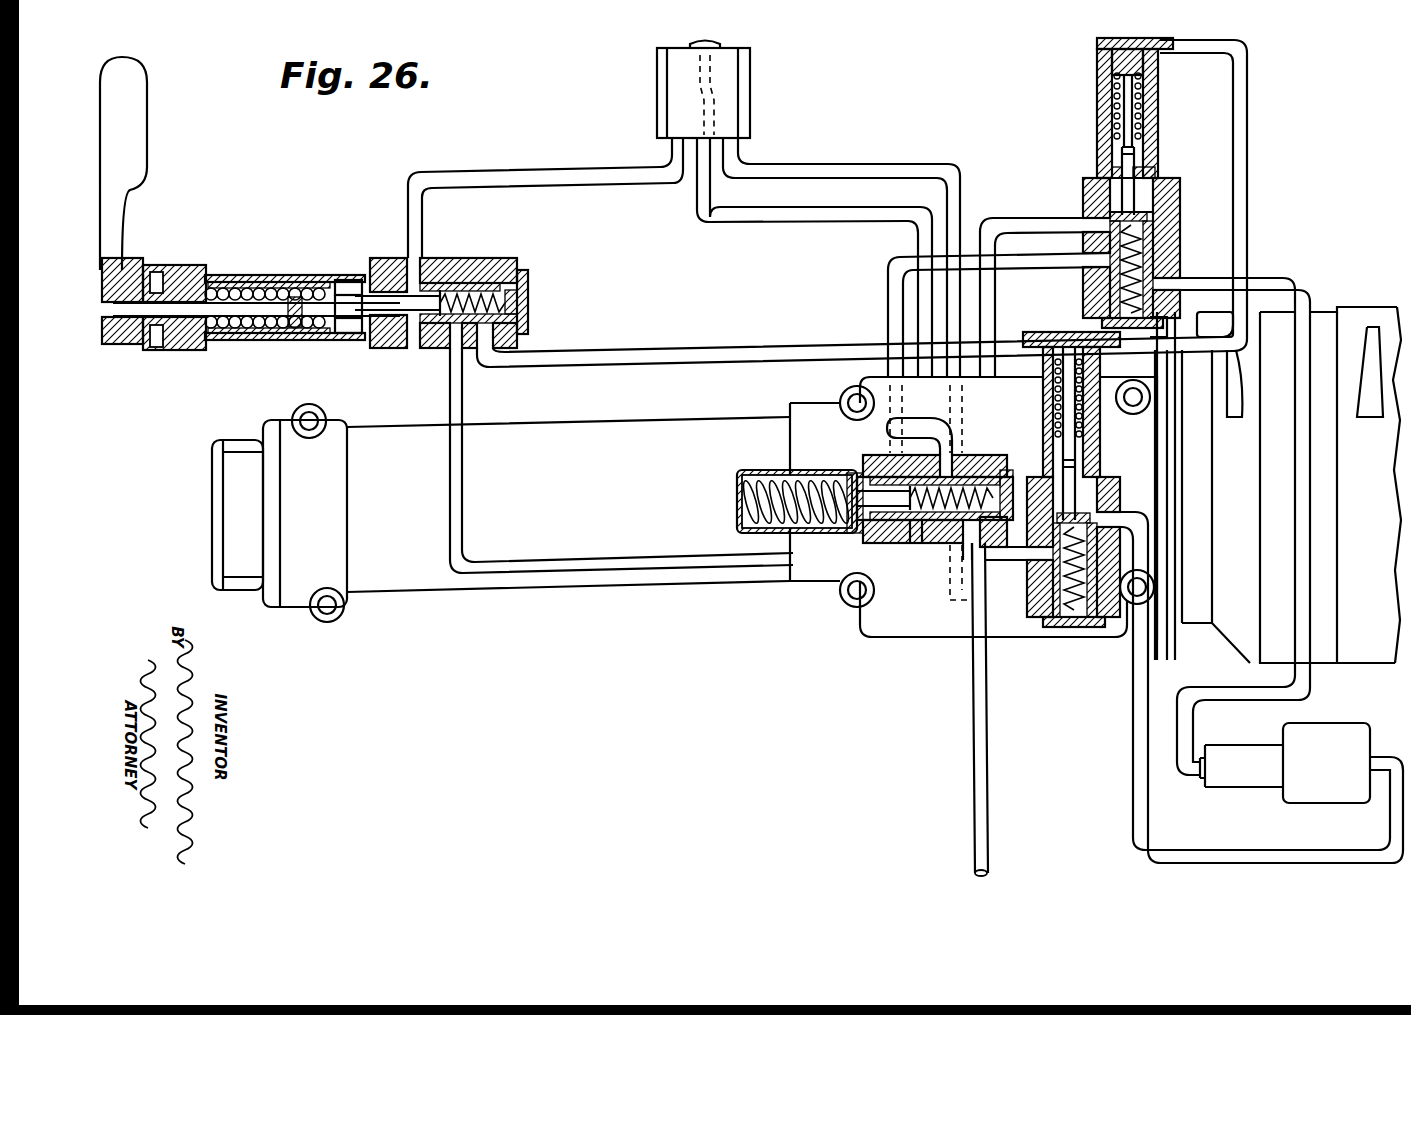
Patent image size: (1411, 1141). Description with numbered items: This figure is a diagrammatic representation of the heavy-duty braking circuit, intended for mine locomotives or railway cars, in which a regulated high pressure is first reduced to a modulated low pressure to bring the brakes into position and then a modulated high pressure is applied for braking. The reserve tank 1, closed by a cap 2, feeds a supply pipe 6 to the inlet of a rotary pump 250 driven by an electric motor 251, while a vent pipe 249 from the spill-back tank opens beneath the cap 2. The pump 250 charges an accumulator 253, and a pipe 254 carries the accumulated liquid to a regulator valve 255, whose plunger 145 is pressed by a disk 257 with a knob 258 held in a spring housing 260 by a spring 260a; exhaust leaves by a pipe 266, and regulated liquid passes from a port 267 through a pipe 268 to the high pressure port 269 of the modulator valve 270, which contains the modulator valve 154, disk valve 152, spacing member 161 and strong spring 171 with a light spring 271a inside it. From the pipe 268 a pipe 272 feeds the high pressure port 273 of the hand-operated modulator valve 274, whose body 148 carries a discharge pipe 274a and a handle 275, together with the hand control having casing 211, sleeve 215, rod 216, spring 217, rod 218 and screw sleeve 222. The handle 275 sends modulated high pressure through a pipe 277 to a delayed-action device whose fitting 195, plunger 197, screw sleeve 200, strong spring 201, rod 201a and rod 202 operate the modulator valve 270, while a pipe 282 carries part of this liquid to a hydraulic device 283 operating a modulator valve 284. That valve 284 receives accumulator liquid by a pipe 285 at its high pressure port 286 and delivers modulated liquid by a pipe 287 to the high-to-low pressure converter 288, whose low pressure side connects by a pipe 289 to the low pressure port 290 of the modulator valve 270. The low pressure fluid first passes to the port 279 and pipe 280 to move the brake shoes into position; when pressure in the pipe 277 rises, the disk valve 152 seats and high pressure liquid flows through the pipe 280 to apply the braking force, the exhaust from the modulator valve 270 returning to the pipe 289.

The reserve tank 1 is at (675, 92).
The cap 2 is at (718, 43).
The supply pipe 6 is at (842, 178).
The plunger 145 is at (858, 528).
The valve body 148 is at (398, 267).
The disk valve 152 is at (421, 350).
The modulator valve 154 is at (488, 292).
The spacing member 161 is at (441, 289).
The strong spring 171 is at (528, 277).
The fitting 195 is at (1103, 75).
The plunger 197 is at (1160, 70).
The screw sleeve 200 is at (1102, 178).
The spring 201 is at (1107, 120).
The rod 201a is at (1147, 108).
The rod 202 is at (1143, 157).
The hand control casing 211 is at (226, 276).
The sleeve 215 is at (286, 345).
The rod 216 is at (318, 333).
The spring 217 is at (287, 288).
The rod 218 is at (258, 328).
The screw sleeve 222 is at (178, 346).
The vent pipe 249 is at (807, 214).
The rotary pump 250 is at (923, 593).
The electric motor 251 is at (1362, 638).
The accumulator 253 is at (548, 428).
The pipe 254 is at (918, 420).
The regulator valve 255 is at (990, 455).
The disk 257 is at (855, 470).
The knob 258 is at (850, 490).
The spring housing 260 is at (737, 524).
The spring 260a is at (762, 470).
The pipe 266 is at (915, 523).
The port 267 is at (960, 545).
The pipe 268 is at (1012, 552).
The high pressure port 269 is at (1060, 575).
The modulator valve 270 is at (1113, 490).
The light spring 271a is at (528, 298).
The pipe 272 is at (450, 494).
The high pressure port 273 is at (455, 352).
The hand-operated modulator valve 274 is at (402, 257).
The discharge pipe 274a is at (537, 177).
The handle 275 is at (128, 122).
The pipe 277 is at (650, 352).
The port 279 is at (1027, 585).
The pipe 280 is at (975, 714).
The pipe 282 is at (1247, 168).
The hydraulic device 283 is at (1098, 45).
The modulator valve 284 is at (1180, 230).
The pipe 285 is at (1045, 262).
The high pressure port 286 is at (1085, 277).
The pipe 287 is at (1311, 468).
The high-to-low pressure converter 288 is at (1085, 222).
The pipe 289 is at (1135, 767).
The low pressure port 290 is at (1115, 508).